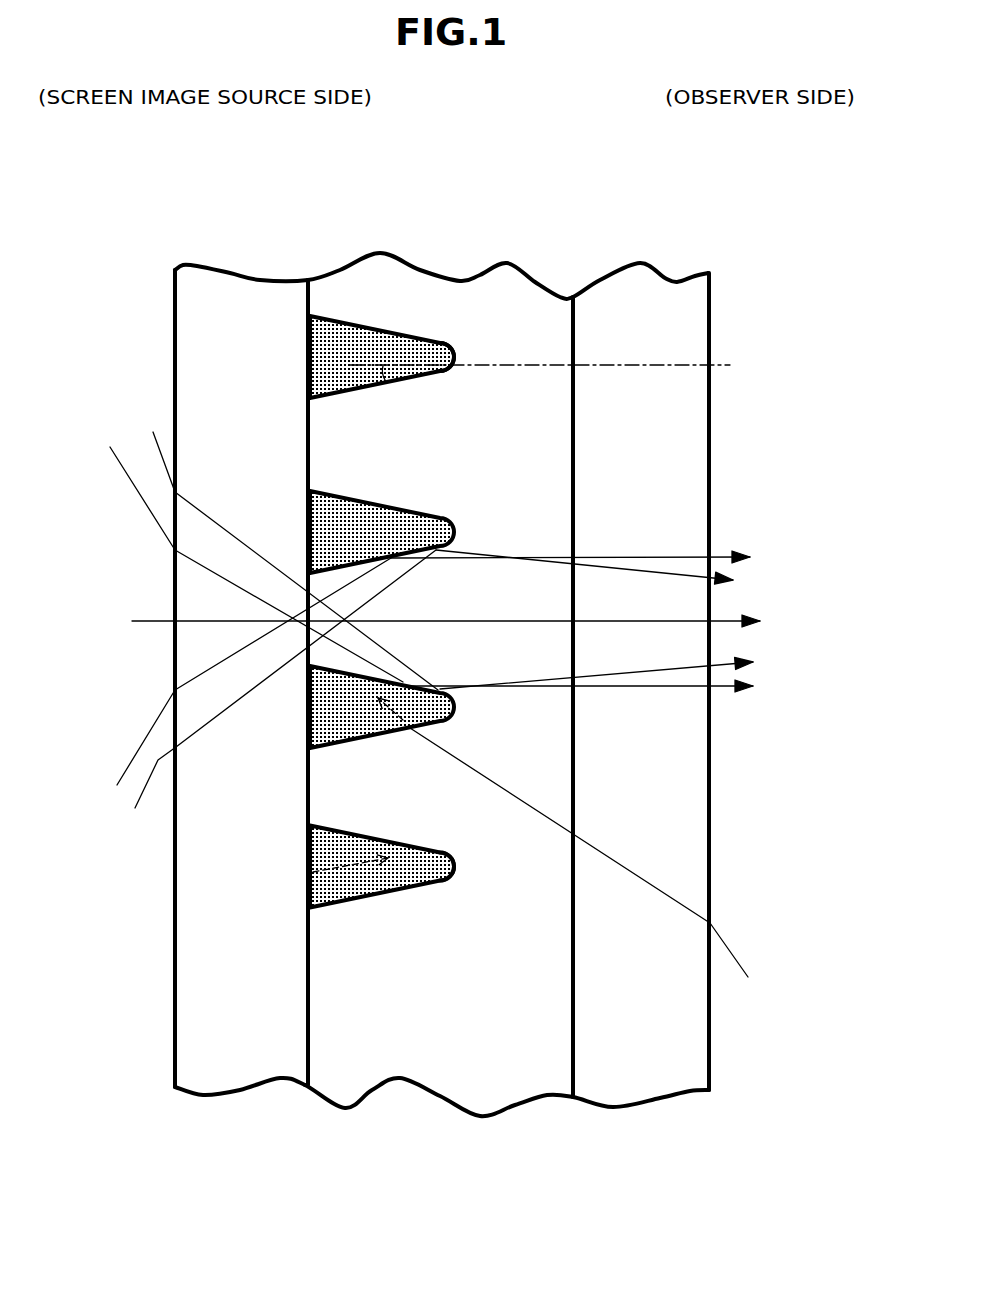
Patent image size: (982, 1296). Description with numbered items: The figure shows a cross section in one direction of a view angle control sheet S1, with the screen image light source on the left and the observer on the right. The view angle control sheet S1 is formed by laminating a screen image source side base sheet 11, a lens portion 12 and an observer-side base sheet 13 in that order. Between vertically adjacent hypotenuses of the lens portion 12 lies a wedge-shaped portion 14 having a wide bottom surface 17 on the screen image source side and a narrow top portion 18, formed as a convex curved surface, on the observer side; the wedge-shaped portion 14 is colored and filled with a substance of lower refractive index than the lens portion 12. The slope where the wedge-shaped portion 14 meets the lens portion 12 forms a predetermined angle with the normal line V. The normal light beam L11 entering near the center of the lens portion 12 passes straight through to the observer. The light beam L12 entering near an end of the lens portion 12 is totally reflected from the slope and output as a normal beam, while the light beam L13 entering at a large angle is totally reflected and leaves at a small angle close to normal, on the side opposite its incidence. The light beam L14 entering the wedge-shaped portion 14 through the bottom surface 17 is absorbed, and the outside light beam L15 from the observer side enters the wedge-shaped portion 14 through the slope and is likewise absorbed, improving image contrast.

The screen image source side base sheet 11 is at (220, 312).
The lens portion 12 is at (422, 293).
The observer-side base sheet 13 is at (618, 297).
The wedge-shaped portion 14 is at (343, 358).
The bottom surface 17 is at (308, 360).
The top portion 18 is at (455, 357).
The view angle control sheet S1 is at (690, 213).
The normal line V is at (553, 365).
The normal light beam L11 is at (468, 622).
The light beam L12 is at (596, 559).
The light beam L13 is at (619, 573).
The light beam L14 is at (307, 873).
The outside light beam L15 is at (593, 862).